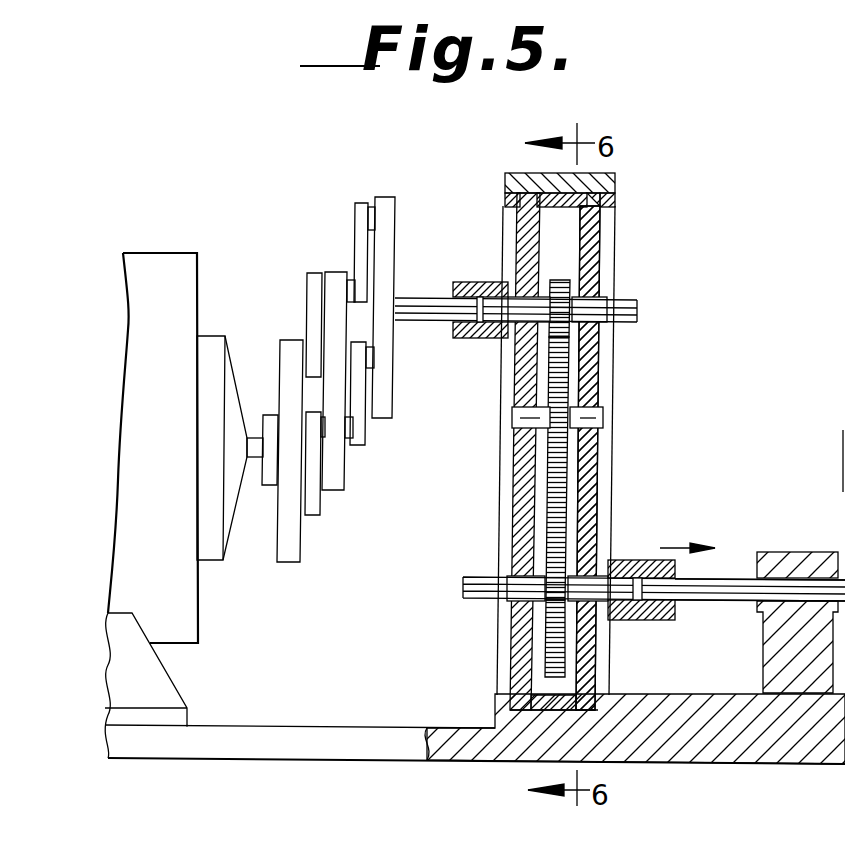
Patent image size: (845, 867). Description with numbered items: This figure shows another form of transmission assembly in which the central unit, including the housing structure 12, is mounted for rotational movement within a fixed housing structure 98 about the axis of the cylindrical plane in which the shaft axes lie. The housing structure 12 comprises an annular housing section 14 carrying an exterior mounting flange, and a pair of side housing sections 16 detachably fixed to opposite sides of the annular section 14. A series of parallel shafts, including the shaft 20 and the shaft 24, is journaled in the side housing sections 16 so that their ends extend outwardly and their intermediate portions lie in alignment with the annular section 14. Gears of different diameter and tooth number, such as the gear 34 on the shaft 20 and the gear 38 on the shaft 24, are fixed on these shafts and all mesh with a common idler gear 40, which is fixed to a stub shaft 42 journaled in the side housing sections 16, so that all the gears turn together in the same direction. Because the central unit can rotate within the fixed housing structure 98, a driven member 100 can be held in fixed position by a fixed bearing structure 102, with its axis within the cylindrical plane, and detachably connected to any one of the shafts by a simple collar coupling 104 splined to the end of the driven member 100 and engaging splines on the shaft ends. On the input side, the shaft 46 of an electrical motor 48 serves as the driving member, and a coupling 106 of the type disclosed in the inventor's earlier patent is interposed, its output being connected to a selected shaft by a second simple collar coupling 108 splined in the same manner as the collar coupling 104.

The housing structure 12 is at (606, 219).
The annular housing section 14 is at (530, 682).
The side housing sections 16 is at (610, 477).
The shaft 20 is at (596, 302).
The shaft 24 is at (530, 582).
The gear 34 is at (567, 279).
The gear 38 is at (547, 634).
The idler gear 40 is at (562, 380).
The stub shaft 42 is at (594, 418).
The shaft of electrical motor 46 is at (258, 452).
The electrical motor 48 is at (175, 312).
The fixed housing structure 98 is at (624, 167).
The driven member 100 is at (813, 542).
The fixed bearing structure 102 is at (778, 651).
The collar coupling 104 is at (637, 558).
The coupling 106 is at (319, 267).
The collar coupling 108 is at (485, 252).